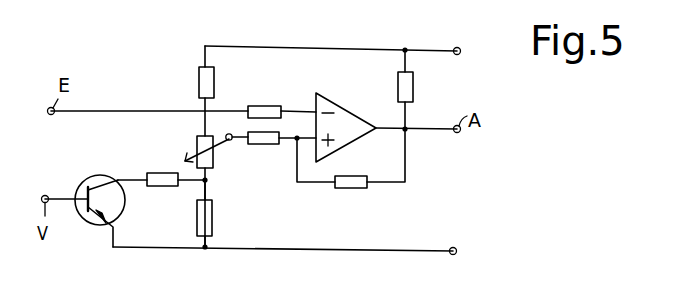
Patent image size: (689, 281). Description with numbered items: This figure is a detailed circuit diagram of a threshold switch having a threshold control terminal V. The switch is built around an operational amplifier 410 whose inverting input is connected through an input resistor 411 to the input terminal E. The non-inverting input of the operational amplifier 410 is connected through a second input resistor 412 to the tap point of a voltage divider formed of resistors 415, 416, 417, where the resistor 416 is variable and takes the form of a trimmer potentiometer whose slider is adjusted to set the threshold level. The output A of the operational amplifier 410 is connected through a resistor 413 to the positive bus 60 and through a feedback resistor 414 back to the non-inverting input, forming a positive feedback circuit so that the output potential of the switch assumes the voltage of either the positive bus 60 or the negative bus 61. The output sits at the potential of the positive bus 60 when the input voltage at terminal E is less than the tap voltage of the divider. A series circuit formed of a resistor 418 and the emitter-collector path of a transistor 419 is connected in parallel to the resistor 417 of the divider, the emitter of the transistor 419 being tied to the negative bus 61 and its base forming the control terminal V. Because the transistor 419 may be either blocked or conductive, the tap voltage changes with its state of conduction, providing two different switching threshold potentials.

The positive bus 60 is at (467, 38).
The negative bus 61 is at (455, 248).
The operational amplifier 410 is at (348, 118).
The input resistor 411 is at (265, 106).
The input resistor 412 is at (270, 145).
The resistor 413 is at (413, 87).
The feedback resistor 414 is at (357, 188).
The resistor 415 is at (199, 85).
The variable resistor 416 is at (214, 153).
The resistor 417 is at (212, 218).
The resistor 418 is at (165, 187).
The transistor 419 is at (93, 180).